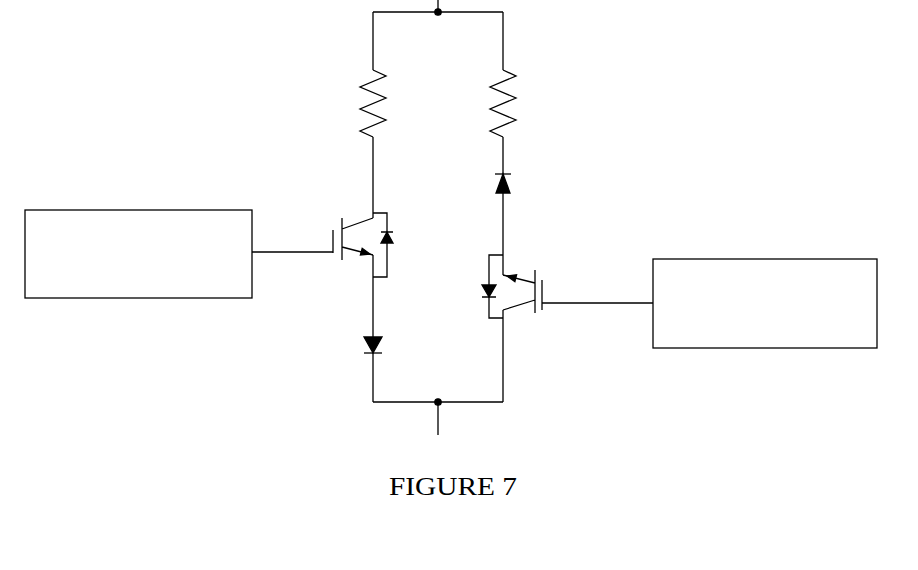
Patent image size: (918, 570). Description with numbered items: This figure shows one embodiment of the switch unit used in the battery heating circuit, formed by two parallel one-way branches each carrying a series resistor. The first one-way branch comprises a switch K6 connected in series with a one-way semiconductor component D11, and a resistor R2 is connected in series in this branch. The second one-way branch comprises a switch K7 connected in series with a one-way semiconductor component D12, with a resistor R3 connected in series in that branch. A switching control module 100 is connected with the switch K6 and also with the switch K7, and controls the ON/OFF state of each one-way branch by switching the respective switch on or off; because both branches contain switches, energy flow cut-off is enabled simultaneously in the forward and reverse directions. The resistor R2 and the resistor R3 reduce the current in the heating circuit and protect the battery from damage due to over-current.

The switching control module 100 is at (159, 280).
The resistor R2 is at (349, 103).
The resistor R3 is at (528, 103).
The one-way semiconductor component D11 is at (347, 347).
The one-way semiconductor component D12 is at (533, 188).
The switch K6 is at (322, 244).
The switch K7 is at (567, 286).